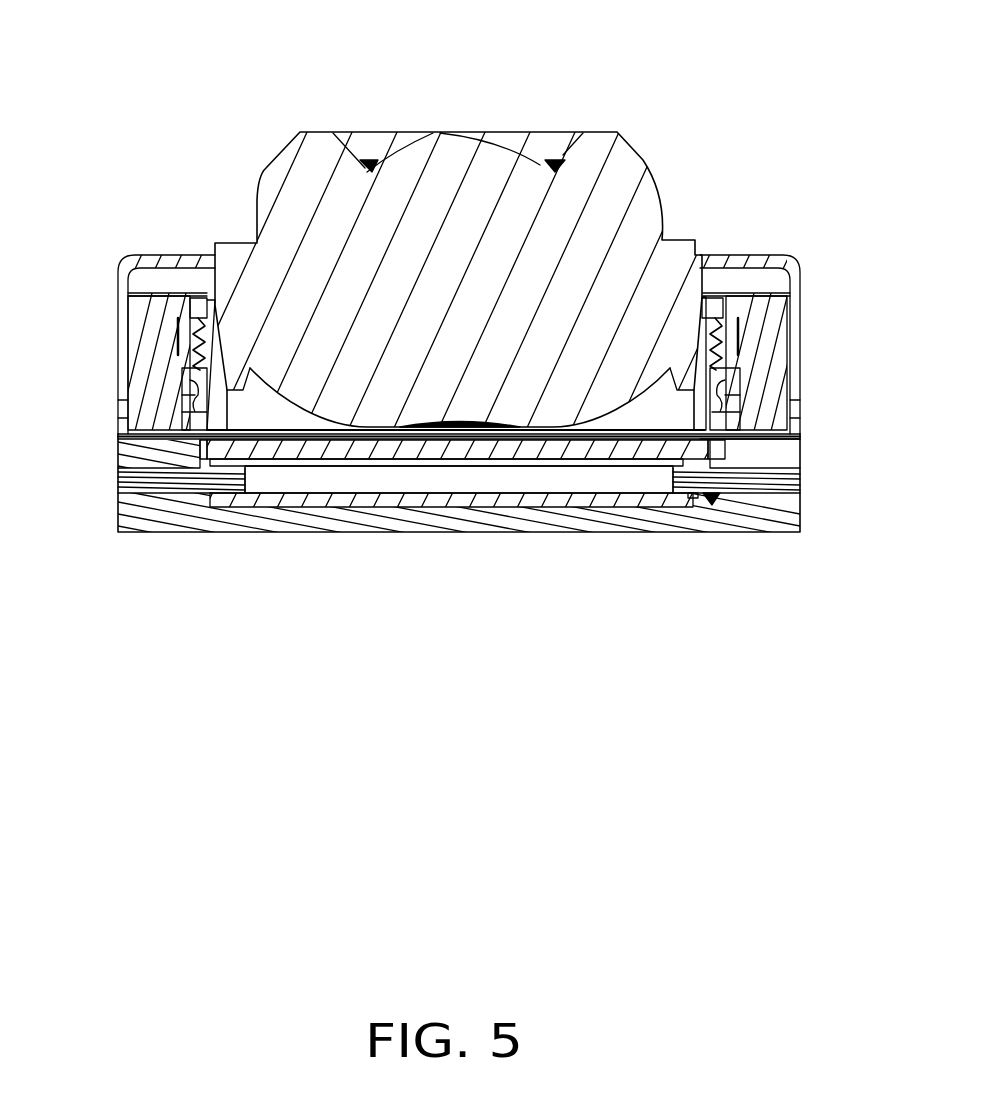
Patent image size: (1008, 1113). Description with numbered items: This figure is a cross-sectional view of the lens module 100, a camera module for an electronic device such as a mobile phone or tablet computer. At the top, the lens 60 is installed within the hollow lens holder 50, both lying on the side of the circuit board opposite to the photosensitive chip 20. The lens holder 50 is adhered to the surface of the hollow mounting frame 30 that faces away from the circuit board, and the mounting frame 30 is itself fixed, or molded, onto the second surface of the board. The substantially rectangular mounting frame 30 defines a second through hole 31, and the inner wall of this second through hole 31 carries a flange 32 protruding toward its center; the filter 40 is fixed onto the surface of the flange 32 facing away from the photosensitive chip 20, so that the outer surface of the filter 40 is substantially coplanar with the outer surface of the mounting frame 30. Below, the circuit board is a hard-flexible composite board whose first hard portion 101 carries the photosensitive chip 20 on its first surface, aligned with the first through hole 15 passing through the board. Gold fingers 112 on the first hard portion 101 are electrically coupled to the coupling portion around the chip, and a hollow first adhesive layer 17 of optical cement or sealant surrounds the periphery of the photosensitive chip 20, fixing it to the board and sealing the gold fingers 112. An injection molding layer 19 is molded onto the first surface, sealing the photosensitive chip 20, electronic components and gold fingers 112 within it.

The lens module 100 is at (405, 50).
The lens 60 is at (620, 190).
The lens holder 50 is at (770, 330).
The mounting frame 30 is at (150, 446).
The second through hole 31 is at (770, 433).
The filter 40 is at (360, 450).
The flange 32 is at (215, 467).
The first through hole 15 is at (491, 477).
The photosensitive chip 20 is at (417, 501).
The injection molding layer 19 is at (787, 517).
The first hard portion 101 is at (790, 481).
The gold fingers 112 is at (693, 498).
The first adhesive layer 17 is at (711, 499).